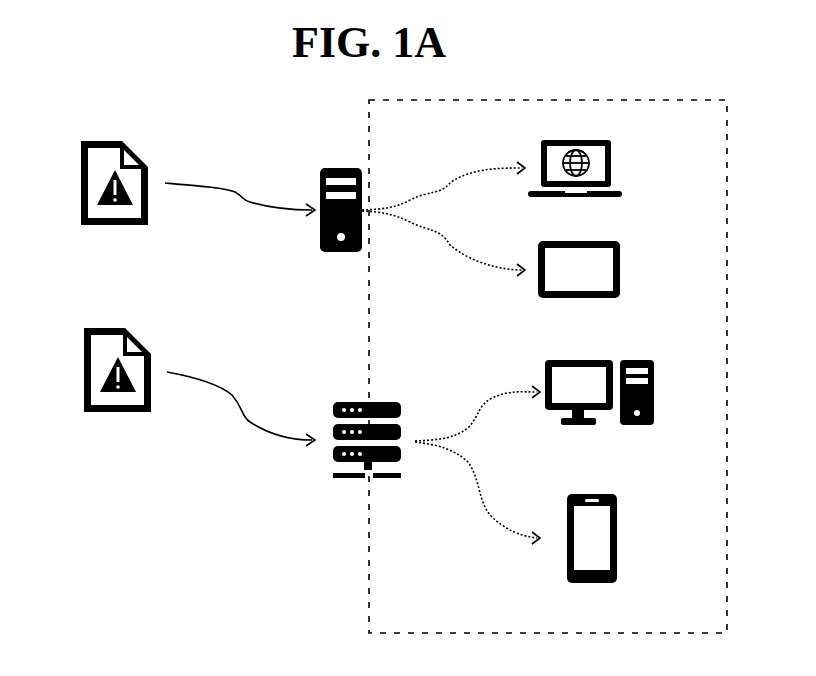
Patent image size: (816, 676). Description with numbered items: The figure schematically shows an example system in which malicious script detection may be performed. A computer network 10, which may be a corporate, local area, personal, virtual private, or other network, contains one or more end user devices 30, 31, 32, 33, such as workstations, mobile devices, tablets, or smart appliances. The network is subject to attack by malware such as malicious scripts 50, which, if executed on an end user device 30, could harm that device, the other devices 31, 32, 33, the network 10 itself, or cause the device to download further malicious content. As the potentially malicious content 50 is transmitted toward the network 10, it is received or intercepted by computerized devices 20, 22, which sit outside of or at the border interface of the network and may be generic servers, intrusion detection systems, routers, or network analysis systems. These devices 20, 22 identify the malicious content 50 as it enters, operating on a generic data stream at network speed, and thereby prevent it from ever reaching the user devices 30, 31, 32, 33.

The computer network 10 is at (713, 133).
The malicious script 50 is at (65, 201).
The computerized device 20 is at (351, 283).
The computerized device 22 is at (357, 512).
The end user device 30 is at (657, 215).
The end user device 31 is at (657, 283).
The end user device 32 is at (690, 405).
The end user device 33 is at (652, 545).